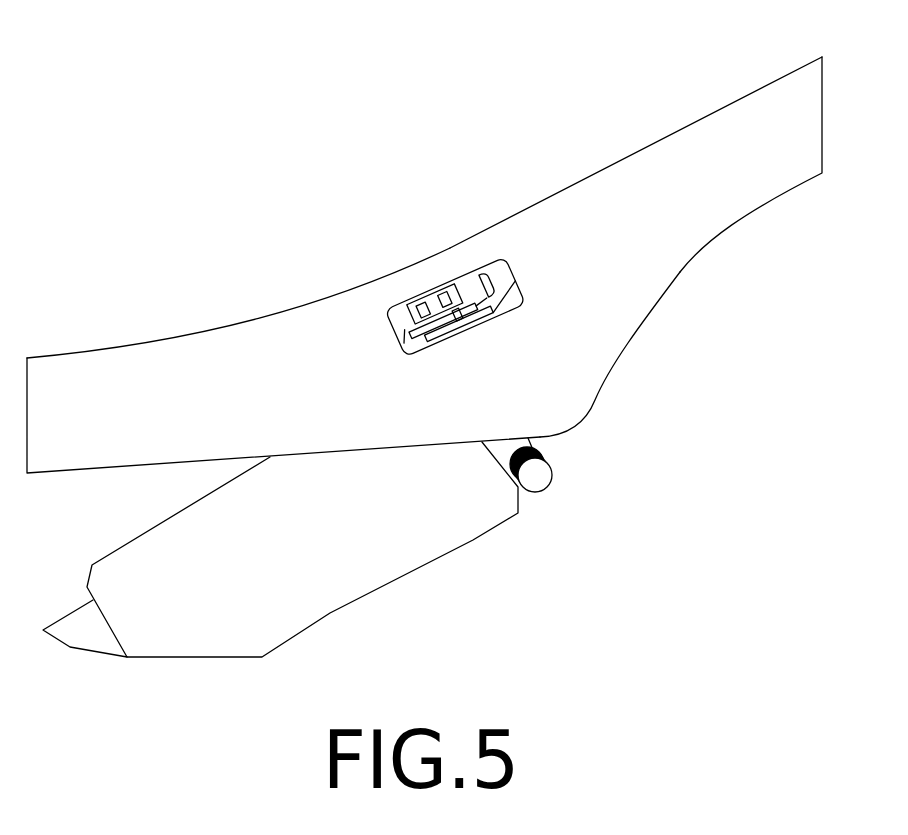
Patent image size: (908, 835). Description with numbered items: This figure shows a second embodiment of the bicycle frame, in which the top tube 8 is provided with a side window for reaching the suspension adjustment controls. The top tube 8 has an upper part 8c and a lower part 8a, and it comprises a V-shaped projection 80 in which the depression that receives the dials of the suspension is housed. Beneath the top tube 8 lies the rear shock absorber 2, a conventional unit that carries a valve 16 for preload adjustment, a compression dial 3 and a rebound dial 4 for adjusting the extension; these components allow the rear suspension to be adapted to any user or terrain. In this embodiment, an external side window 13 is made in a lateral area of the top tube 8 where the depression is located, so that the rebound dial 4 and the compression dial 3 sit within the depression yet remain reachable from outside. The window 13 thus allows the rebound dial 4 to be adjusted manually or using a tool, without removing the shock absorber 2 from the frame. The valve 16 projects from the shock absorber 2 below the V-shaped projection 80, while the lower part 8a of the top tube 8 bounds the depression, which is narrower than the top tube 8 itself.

The top tube 8 is at (226, 383).
The upper part of the top tube 8c is at (646, 147).
The lower part of the top tube 8a is at (722, 234).
The V-shaped projection 80 is at (545, 400).
The external side window 13 is at (506, 257).
The rebound dial 4 is at (433, 303).
The compression dial 3 is at (478, 316).
The valve 16 is at (545, 483).
The rear shock absorber 2 is at (308, 570).